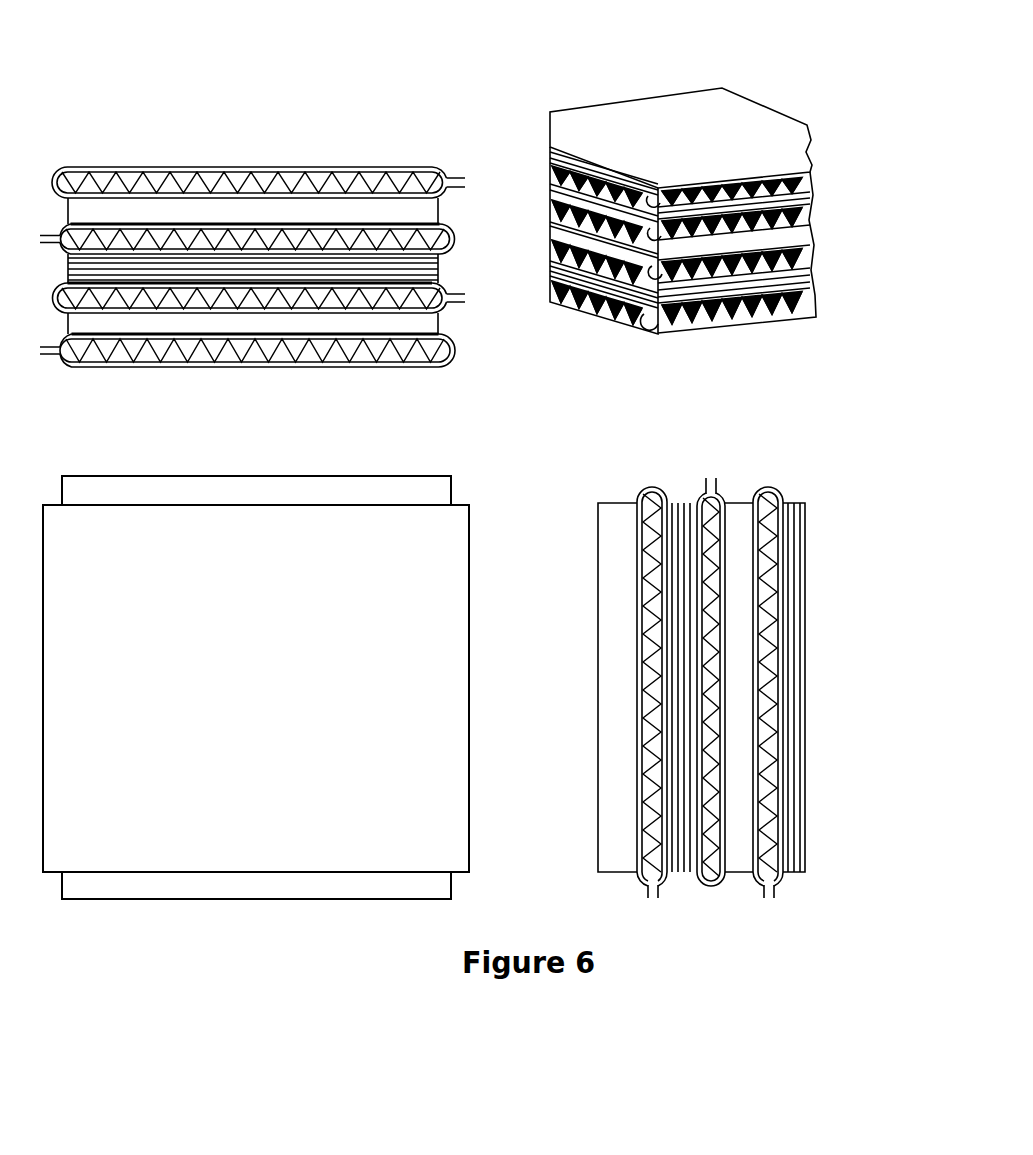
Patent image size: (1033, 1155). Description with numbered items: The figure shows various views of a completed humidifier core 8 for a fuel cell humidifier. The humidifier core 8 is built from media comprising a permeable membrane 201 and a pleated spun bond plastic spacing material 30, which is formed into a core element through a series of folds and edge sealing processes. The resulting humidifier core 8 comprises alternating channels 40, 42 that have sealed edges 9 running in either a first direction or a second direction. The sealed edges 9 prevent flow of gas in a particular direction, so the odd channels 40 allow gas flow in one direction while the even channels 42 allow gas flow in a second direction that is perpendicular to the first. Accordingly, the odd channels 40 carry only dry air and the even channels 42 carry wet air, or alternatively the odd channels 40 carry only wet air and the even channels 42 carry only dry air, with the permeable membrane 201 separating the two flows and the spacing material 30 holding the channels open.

The humidifier core 8 is at (661, 83).
The sealed edges 9 is at (460, 169).
The pleated spun bond plastic spacing material 30 is at (242, 168).
The odd channels 40 is at (314, 353).
The even channels 42 is at (641, 546).
The permeable membrane 201 is at (173, 167).